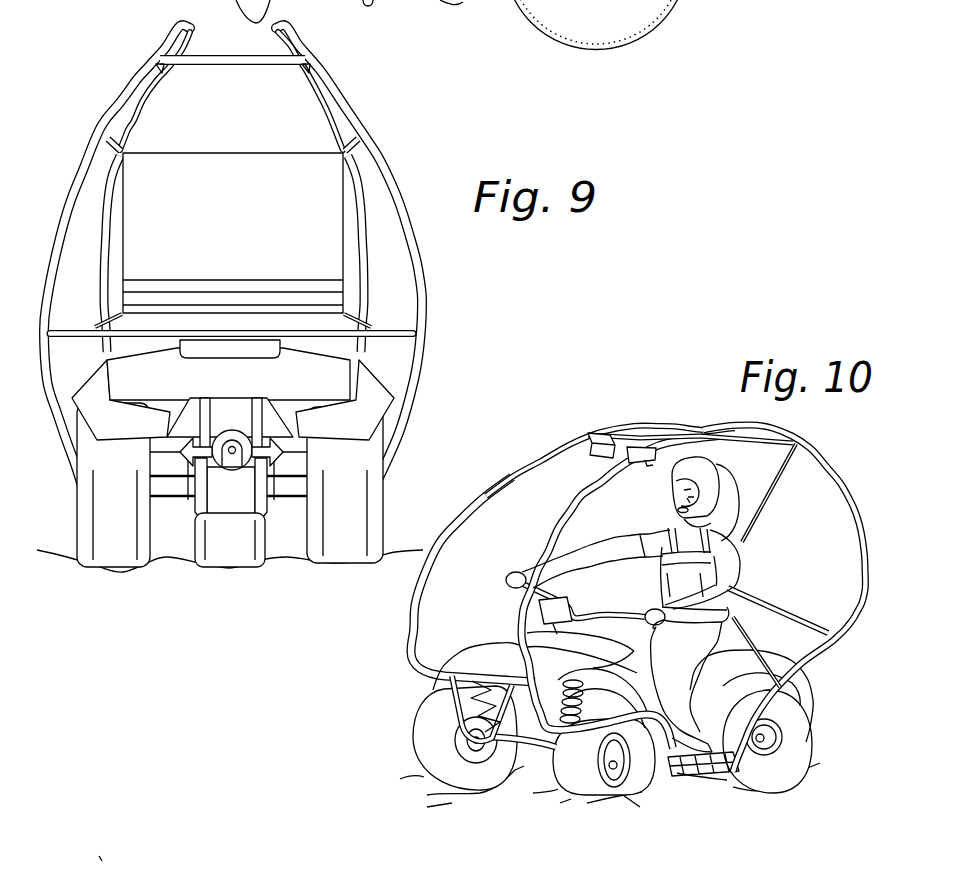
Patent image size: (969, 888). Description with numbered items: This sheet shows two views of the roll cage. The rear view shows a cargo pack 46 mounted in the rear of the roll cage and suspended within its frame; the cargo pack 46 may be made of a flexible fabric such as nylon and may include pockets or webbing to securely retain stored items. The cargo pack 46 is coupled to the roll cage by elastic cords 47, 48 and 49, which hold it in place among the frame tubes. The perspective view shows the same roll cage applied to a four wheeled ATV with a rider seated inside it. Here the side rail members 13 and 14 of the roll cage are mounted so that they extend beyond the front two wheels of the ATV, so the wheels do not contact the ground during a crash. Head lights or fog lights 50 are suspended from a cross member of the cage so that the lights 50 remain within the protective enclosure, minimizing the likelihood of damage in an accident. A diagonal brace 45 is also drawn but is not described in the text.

In FIG. 10, the side rail member 13 is at (836, 469).
In FIG. 10, the side rail member 14 is at (553, 447).
In FIG. 10, the diagonal brace 45 is at (716, 680).
In FIG. 9, the cargo pack 46 is at (253, 222).
In FIG. 9, the elastic cord 47 is at (150, 83).
In FIG. 9, the elastic cord 48 is at (113, 140).
In FIG. 9, the elastic cord 49 is at (86, 302).
In FIG. 10, the lights 50 is at (632, 444).